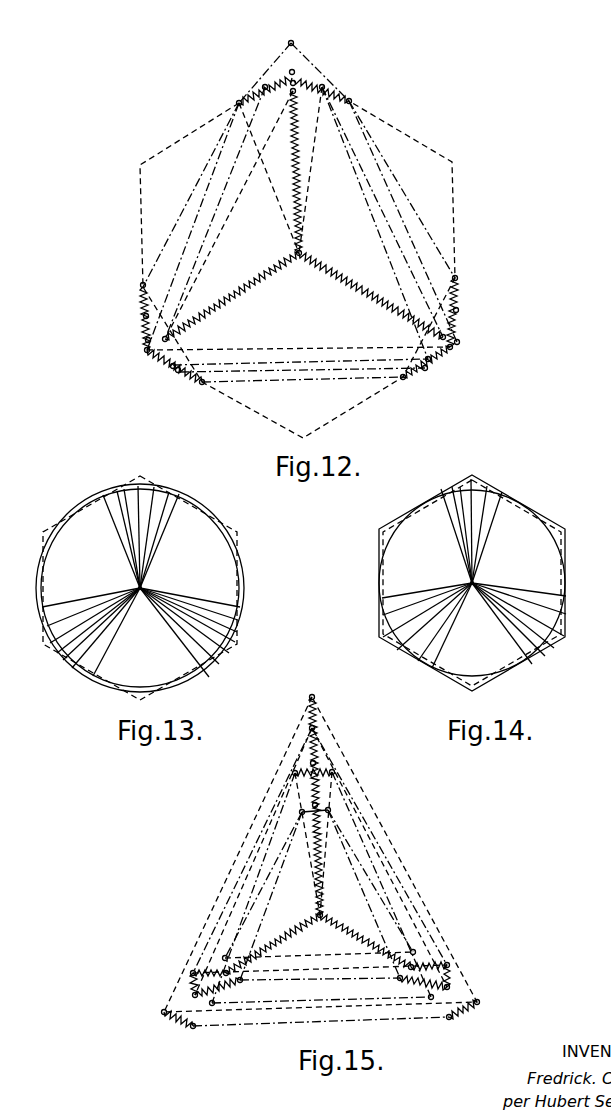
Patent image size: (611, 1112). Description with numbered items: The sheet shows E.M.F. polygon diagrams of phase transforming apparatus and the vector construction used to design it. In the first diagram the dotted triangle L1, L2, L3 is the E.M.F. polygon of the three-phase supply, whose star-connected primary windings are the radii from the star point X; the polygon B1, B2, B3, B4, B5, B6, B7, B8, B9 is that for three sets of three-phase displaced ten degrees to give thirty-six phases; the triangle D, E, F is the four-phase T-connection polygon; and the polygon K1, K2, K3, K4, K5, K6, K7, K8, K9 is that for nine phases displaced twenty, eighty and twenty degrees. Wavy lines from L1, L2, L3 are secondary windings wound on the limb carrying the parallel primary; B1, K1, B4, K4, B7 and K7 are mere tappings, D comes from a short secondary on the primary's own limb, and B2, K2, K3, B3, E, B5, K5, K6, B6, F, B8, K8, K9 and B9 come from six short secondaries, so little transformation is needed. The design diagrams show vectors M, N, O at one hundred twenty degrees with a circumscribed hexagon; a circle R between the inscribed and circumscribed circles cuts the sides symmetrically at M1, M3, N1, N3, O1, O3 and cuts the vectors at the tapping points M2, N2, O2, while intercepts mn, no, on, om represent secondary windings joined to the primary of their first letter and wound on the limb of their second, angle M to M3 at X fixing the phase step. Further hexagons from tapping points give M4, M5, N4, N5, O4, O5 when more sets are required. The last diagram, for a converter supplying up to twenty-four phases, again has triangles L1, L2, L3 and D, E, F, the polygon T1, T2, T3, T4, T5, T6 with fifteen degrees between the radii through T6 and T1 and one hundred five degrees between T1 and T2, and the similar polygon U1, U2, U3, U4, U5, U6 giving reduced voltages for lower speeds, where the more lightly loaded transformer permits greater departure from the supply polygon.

In FIG. 12, the phase point D is at (291, 32).
In FIG. 15, the phase point D is at (312, 687).
In FIG. 12, the 3-phase supply vertex L1 is at (295, 72).
In FIG. 15, the 3-phase supply vertex L1 is at (315, 728).
In FIG. 12, the 3-phase supply vertex L2 is at (452, 349).
In FIG. 15, the 3-phase supply vertex L2 is at (488, 1012).
In FIG. 12, the 3-phase supply vertex L3 is at (145, 352).
In FIG. 15, the 3-phase supply vertex L3 is at (153, 1020).
In FIG. 12, the 36-phase polygon point B1 is at (295, 85).
In FIG. 12, the 36-phase polygon point B2 is at (325, 86).
In FIG. 12, the 36-phase polygon point B3 is at (459, 310).
In FIG. 12, the 36-phase polygon point B4 is at (460, 342).
In FIG. 12, the 36-phase polygon point B5 is at (425, 371).
In FIG. 12, the 36-phase polygon point B6 is at (178, 373).
In FIG. 12, the 36-phase polygon point B7 is at (145, 340).
In FIG. 12, the 36-phase polygon point B8 is at (143, 316).
In FIG. 12, the 36-phase polygon point B9 is at (264, 84).
In FIG. 12, the 9-phase polygon point K1 is at (291, 93).
In FIG. 12, the 9-phase polygon point K2 is at (352, 101).
In FIG. 12, the 9-phase polygon point K3 is at (466, 277).
In FIG. 12, the 9-phase polygon point K4 is at (440, 337).
In FIG. 12, the 9-phase polygon point K5 is at (403, 380).
In FIG. 12, the 9-phase polygon point K6 is at (202, 385).
In FIG. 12, the 9-phase polygon point K7 is at (168, 339).
In FIG. 12, the 9-phase polygon point K8 is at (140, 285).
In FIG. 12, the 9-phase polygon point K9 is at (236, 102).
In FIG. 12, the star point X is at (308, 247).
In FIG. 13, the star point X is at (149, 584).
In FIG. 14, the star point X is at (481, 577).
In FIG. 15, the star point X is at (330, 909).
In FIG. 12, the phase point E is at (430, 361).
In FIG. 15, the phase point E is at (450, 1020).
In FIG. 12, the phase point F is at (171, 368).
In FIG. 15, the phase point F is at (193, 1029).
In FIG. 13, the primary E.M.F. vector M is at (135, 525).
In FIG. 14, the primary E.M.F. vector M is at (468, 518).
In FIG. 13, the secondary winding intercept mn is at (157, 525).
In FIG. 13, the circle intersection M1 is at (110, 505).
In FIG. 14, the circle intersection M1 is at (441, 493).
In FIG. 13, the vector intersection M2 is at (126, 530).
In FIG. 14, the vector intersection M2 is at (455, 510).
In FIG. 13, the circle intersection M3 is at (186, 489).
In FIG. 14, the circle intersection M3 is at (500, 493).
In FIG. 14, the second-hexagon intersection M4 is at (447, 519).
In FIG. 14, the second-hexagon intersection M5 is at (489, 518).
In FIG. 13, the circle R is at (100, 512).
In FIG. 14, the circle R is at (558, 527).
In FIG. 13, the primary E.M.F. vector O is at (83, 628).
In FIG. 14, the primary E.M.F. vector O is at (416, 620).
In FIG. 13, the circle intersection O1 is at (88, 668).
In FIG. 14, the circle intersection O1 is at (419, 663).
In FIG. 13, the vector intersection O2 is at (76, 645).
In FIG. 14, the vector intersection O2 is at (408, 643).
In FIG. 13, the circle intersection O3 is at (76, 603).
In FIG. 14, the circle intersection O3 is at (410, 598).
In FIG. 14, the second-hexagon intersection O4 is at (400, 651).
In FIG. 14, the second-hexagon intersection O5 is at (382, 616).
In FIG. 13, the secondary winding intercept om is at (48, 638).
In FIG. 13, the secondary winding intercept on is at (58, 658).
In FIG. 13, the primary E.M.F. vector N is at (196, 623).
In FIG. 14, the primary E.M.F. vector N is at (527, 615).
In FIG. 13, the circle intersection N1 is at (201, 604).
In FIG. 14, the circle intersection N1 is at (566, 596).
In FIG. 13, the vector intersection N2 is at (204, 640).
In FIG. 14, the vector intersection N2 is at (530, 640).
In FIG. 13, the circle intersection N3 is at (200, 667).
In FIG. 14, the circle intersection N3 is at (532, 664).
In FIG. 14, the second-hexagon intersection N4 is at (566, 614).
In FIG. 14, the second-hexagon intersection N5 is at (554, 648).
In FIG. 13, the secondary winding intercept no is at (232, 653).
In FIG. 15, the 24-phase polygon point T1 is at (335, 772).
In FIG. 15, the 24-phase polygon point T2 is at (450, 965).
In FIG. 15, the 24-phase polygon point T3 is at (430, 1000).
In FIG. 15, the 24-phase polygon point T4 is at (213, 1006).
In FIG. 15, the 24-phase polygon point T5 is at (190, 973).
In FIG. 15, the 24-phase polygon point T6 is at (292, 773).
In FIG. 15, the reduced-voltage polygon point U1 is at (331, 810).
In FIG. 15, the reduced-voltage polygon point U2 is at (415, 950).
In FIG. 15, the reduced-voltage polygon point U3 is at (399, 981).
In FIG. 15, the reduced-voltage polygon point U4 is at (241, 983).
In FIG. 15, the reduced-voltage polygon point U5 is at (224, 956).
In FIG. 15, the reduced-voltage polygon point U6 is at (299, 812).